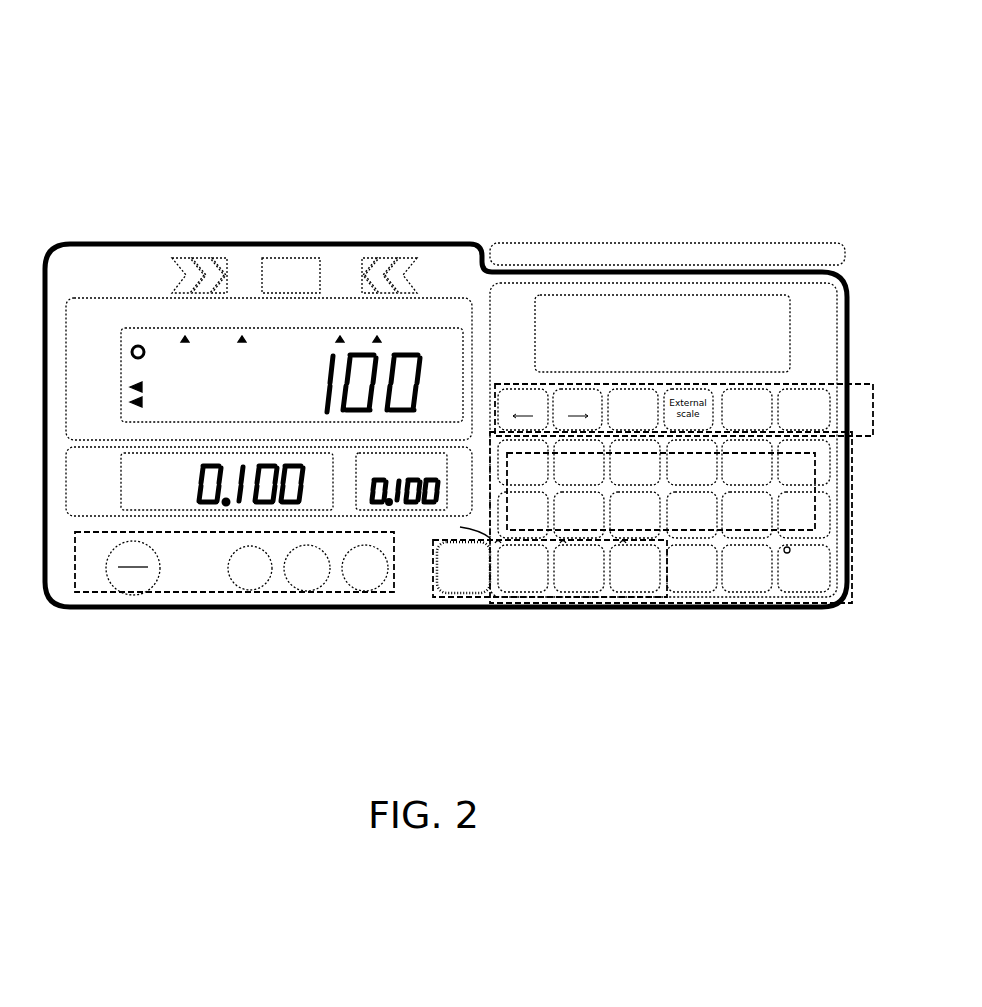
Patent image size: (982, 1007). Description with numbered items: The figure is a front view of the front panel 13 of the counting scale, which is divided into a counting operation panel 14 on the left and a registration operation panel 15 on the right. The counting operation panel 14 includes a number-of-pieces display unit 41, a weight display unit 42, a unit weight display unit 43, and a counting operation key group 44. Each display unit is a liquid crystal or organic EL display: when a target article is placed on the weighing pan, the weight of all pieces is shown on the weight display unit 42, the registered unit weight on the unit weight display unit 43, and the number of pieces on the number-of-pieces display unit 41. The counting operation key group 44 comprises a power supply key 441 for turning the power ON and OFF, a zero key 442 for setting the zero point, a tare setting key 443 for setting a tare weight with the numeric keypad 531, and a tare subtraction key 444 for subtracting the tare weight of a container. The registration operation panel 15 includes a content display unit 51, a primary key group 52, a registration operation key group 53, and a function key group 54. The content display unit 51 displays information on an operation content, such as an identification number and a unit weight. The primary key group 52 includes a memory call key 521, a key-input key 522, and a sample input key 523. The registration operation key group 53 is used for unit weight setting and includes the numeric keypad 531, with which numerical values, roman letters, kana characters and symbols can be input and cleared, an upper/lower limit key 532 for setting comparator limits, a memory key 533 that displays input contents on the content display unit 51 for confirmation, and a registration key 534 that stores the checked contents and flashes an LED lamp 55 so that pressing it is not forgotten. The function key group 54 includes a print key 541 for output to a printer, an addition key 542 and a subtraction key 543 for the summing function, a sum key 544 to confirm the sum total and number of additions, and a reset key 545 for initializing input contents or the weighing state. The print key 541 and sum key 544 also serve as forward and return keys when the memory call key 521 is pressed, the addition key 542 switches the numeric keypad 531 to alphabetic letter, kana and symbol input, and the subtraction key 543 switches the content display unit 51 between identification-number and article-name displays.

The front panel 13 is at (439, 45).
The counting operation panel 14 is at (284, 227).
The registration operation panel 15 is at (666, 156).
The number-of-pieces display unit 41 is at (116, 337).
The weight display unit 42 is at (118, 485).
The unit weight display unit 43 is at (421, 508).
The counting operation key group 44 is at (86, 592).
The power supply key 441 is at (133, 595).
The zero key 442 is at (250, 590).
The tare setting key 443 is at (312, 590).
The tare subtraction key 444 is at (370, 590).
The content display unit 51 is at (656, 298).
The primary key group 52 is at (482, 597).
The memory call key 521 is at (515, 595).
The key-input key 522 is at (580, 595).
The sample input key 523 is at (643, 595).
The registration operation key group 53 is at (852, 575).
The numeric keypad 531 is at (815, 503).
The upper/lower limit key 532 is at (690, 595).
The memory key 533 is at (745, 595).
The registration key 534 is at (803, 595).
The function key group 54 is at (873, 386).
The print key 541 is at (522, 402).
The addition key 542 is at (625, 410).
The subtraction key 543 is at (752, 405).
The sum key 544 is at (575, 408).
The reset key 545 is at (808, 410).
The LED lamp 55 is at (480, 532).